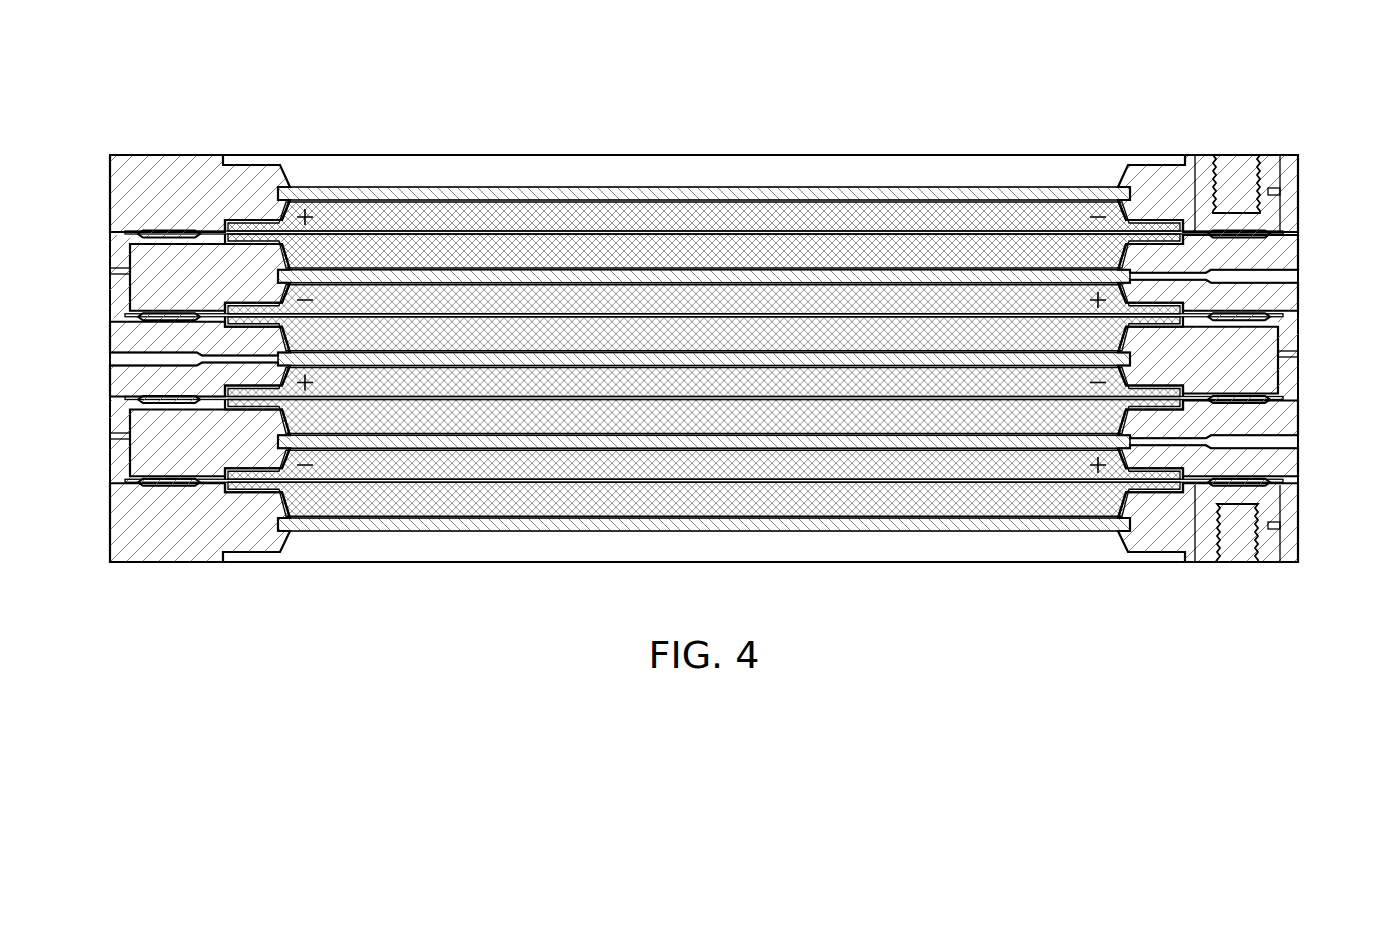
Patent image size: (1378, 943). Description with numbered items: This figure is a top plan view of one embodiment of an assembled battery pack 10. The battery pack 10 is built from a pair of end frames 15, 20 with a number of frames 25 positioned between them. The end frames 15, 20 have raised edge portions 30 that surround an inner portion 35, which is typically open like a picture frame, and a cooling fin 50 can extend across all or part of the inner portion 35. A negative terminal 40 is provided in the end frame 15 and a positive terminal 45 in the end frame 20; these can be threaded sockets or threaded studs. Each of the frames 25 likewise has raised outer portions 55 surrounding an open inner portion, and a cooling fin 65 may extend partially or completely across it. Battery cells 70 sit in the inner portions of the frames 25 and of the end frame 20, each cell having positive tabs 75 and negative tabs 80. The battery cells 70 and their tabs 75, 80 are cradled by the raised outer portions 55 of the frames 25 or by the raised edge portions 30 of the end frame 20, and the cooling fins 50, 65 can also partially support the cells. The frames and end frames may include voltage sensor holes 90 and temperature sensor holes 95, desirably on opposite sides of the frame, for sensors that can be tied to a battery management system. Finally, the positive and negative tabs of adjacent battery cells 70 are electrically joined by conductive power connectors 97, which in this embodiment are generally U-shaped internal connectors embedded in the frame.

The battery pack 10 is at (300, 97).
The end frame 15 is at (110, 172).
The end frame 20 is at (112, 555).
The frames 25 is at (112, 240).
The raised edge portions 30 is at (176, 160).
The inner portion 35 is at (860, 561).
The negative terminal 40 is at (1238, 162).
The positive terminal 45 is at (1238, 562).
The cooling fin 50 is at (520, 187).
The raised outer portions 55 is at (112, 323).
The cooling fin (plate) 65 is at (600, 270).
The battery cells 70 is at (925, 300).
The positive tabs 75 is at (190, 231).
The negative tabs 80 is at (195, 313).
The voltage sensor holes 90 is at (110, 266).
The temperature sensor holes 95 is at (112, 358).
The power connectors 97 is at (110, 288).